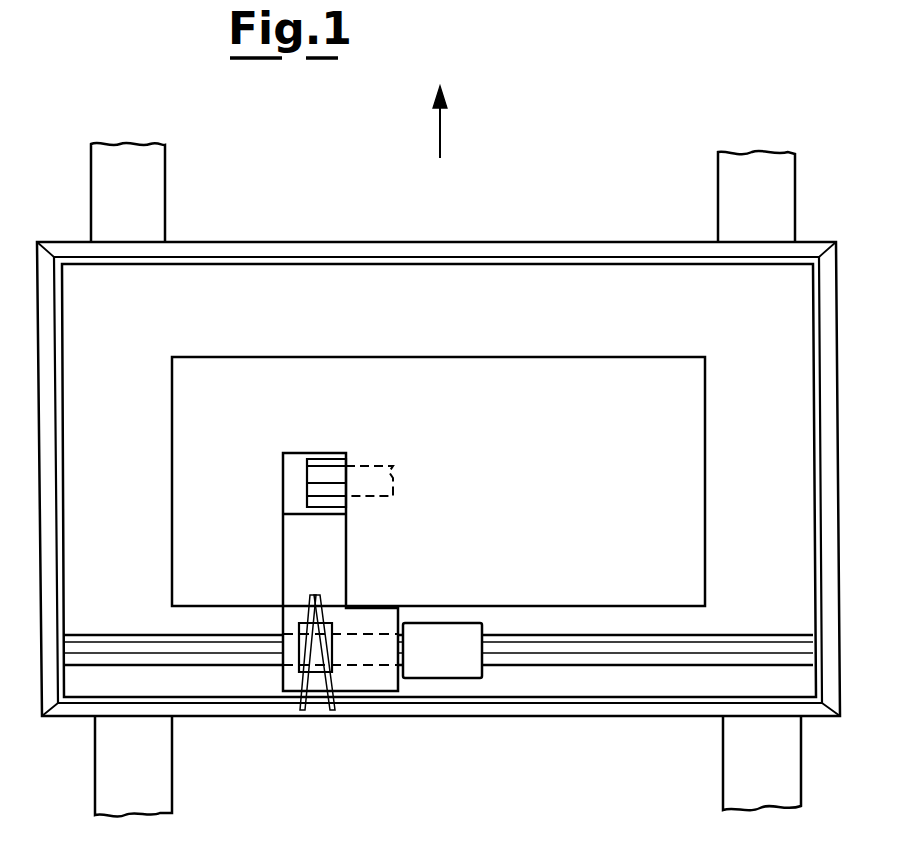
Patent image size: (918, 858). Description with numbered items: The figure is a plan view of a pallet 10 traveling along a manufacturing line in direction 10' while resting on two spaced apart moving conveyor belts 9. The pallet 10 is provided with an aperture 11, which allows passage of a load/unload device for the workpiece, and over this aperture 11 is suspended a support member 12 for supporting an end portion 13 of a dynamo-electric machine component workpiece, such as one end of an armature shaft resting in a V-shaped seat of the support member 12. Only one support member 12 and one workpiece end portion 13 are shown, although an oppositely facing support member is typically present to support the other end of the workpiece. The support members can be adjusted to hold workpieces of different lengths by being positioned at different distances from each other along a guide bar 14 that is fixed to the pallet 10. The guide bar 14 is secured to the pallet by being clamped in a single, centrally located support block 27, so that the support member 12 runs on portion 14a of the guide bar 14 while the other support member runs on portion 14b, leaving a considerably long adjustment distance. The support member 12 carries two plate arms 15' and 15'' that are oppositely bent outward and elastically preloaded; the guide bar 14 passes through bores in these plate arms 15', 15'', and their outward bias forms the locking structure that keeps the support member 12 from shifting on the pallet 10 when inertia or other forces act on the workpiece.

The conveyor belts 9 is at (152, 168).
The pallet 10 is at (438, 452).
The direction of travel 10' is at (469, 122).
The aperture 11 is at (689, 437).
The support member 12 is at (330, 543).
The workpiece end portion 13 is at (377, 468).
The guide bar 14 is at (438, 669).
The portion of guide bar 14a is at (112, 648).
The portion of guide bar 14b is at (757, 648).
The plate arm 15' is at (288, 683).
The plate arm 15'' is at (355, 683).
The support block 27 is at (452, 668).